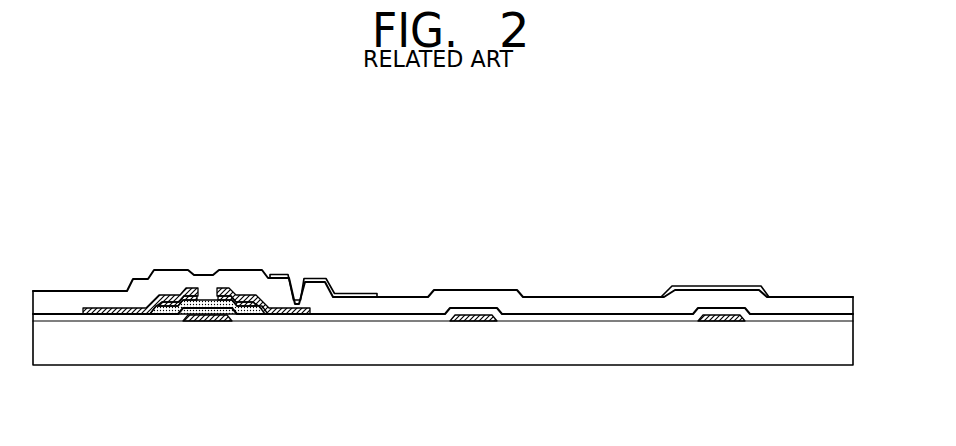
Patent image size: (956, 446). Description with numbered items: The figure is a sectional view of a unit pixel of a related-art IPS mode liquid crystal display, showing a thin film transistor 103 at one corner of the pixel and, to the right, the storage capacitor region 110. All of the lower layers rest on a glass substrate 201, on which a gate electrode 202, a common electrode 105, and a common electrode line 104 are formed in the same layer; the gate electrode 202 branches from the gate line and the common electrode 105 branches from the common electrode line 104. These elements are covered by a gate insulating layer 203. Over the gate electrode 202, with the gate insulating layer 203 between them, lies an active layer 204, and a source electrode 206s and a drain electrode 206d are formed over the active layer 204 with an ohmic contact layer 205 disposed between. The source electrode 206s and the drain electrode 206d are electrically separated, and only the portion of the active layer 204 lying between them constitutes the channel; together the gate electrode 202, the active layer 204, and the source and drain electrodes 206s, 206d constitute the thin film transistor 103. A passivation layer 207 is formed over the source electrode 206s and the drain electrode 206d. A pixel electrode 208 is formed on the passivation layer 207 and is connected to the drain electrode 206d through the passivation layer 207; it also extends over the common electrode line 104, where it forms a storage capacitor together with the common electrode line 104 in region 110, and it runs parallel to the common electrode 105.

The thin film transistor 103 is at (210, 276).
The storage capacitor region 110 is at (757, 301).
The common electrode line 104 is at (716, 322).
The common electrode 105 is at (468, 323).
The glass substrate 201 is at (843, 350).
The gate electrode 202 is at (205, 322).
The gate insulating layer 203 is at (808, 319).
The active layer 204 is at (209, 299).
The ohmic contact layer 205 is at (186, 294).
The source electrode 206s is at (170, 289).
The drain electrode 206d is at (243, 289).
The passivation layer 207 is at (775, 308).
The pixel electrode 208 is at (353, 293).